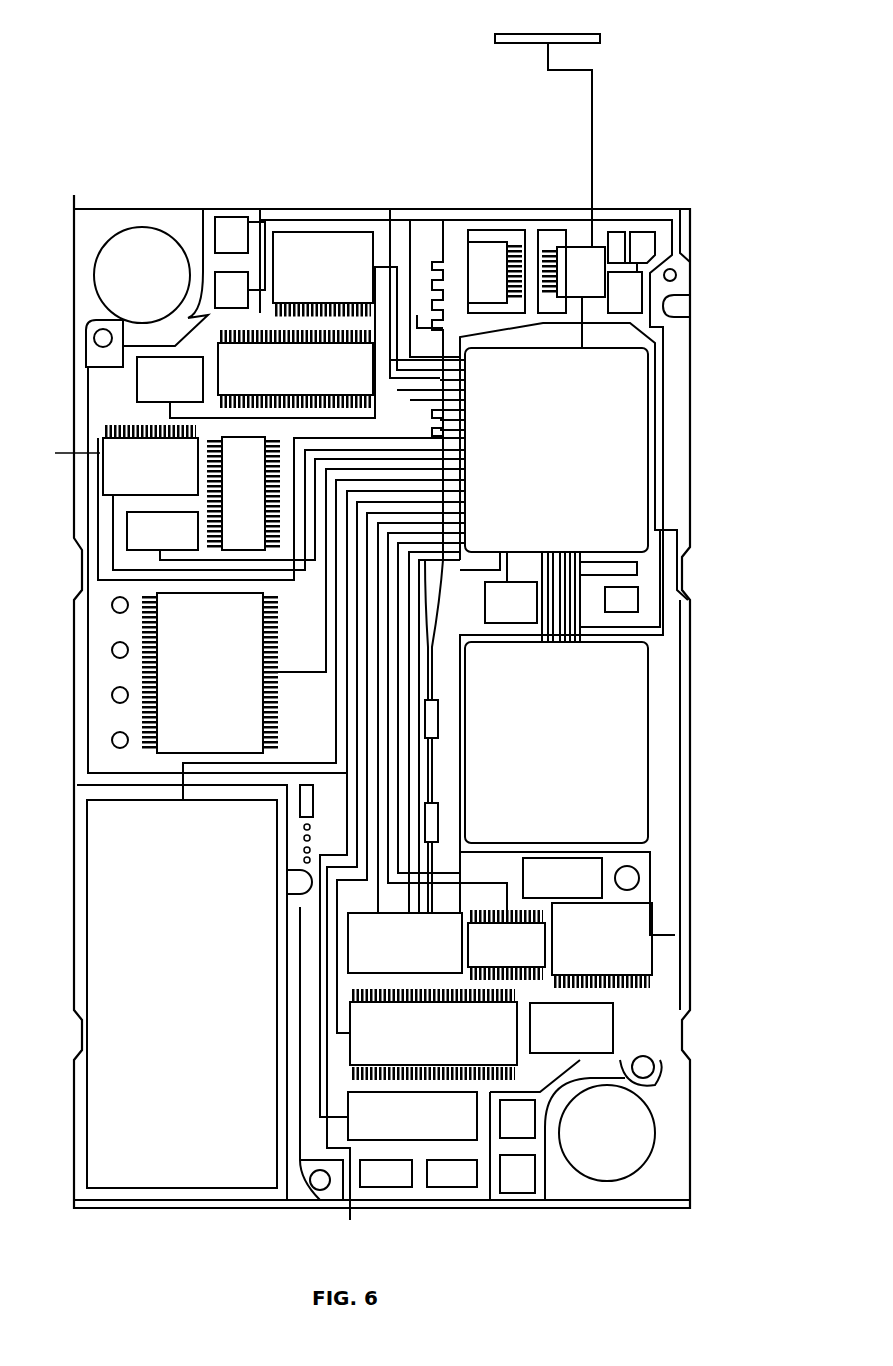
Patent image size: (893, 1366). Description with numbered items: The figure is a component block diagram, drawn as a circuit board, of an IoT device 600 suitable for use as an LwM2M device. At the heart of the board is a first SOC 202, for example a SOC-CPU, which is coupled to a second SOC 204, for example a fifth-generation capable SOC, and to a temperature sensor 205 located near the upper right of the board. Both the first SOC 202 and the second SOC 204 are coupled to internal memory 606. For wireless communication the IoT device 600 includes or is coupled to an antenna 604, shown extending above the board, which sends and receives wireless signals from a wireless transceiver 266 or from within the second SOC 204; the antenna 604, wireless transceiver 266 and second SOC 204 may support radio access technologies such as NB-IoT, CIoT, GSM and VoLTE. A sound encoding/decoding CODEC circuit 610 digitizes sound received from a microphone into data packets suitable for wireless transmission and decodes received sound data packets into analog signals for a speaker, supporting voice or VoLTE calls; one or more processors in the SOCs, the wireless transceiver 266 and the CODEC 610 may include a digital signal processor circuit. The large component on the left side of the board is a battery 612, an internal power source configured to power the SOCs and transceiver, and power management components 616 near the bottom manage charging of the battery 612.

The IoT device 600 is at (135, 155).
The antenna 604 is at (495, 40).
The wireless transceiver 266 is at (595, 245).
The temperature sensor 205 is at (643, 297).
The first SOC 202 is at (578, 464).
The second SOC 204 is at (578, 757).
The CODEC circuit 610 is at (343, 281).
The internal memory 606 is at (315, 380).
The battery 612 is at (202, 1007).
The power management components 616 is at (453, 1050).